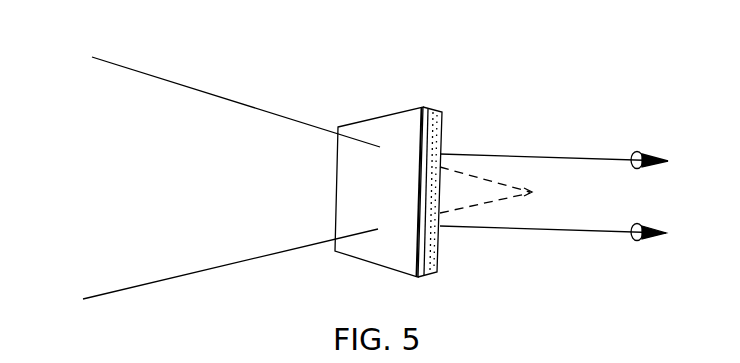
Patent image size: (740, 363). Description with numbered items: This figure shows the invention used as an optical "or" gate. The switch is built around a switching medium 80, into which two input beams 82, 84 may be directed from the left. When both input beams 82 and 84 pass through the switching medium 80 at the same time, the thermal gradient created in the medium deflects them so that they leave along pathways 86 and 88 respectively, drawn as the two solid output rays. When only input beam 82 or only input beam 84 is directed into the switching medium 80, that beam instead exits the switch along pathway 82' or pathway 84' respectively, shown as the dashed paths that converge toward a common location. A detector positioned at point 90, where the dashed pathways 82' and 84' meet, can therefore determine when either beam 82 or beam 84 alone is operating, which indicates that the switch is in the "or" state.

The switching medium 80 is at (397, 112).
The input beam 82 is at (236, 96).
The input beam 84 is at (230, 261).
The pathway 82' is at (510, 176).
The pathway 84' is at (510, 210).
The pathway 86 is at (538, 155).
The pathway 88 is at (532, 232).
The point 90 is at (576, 196).